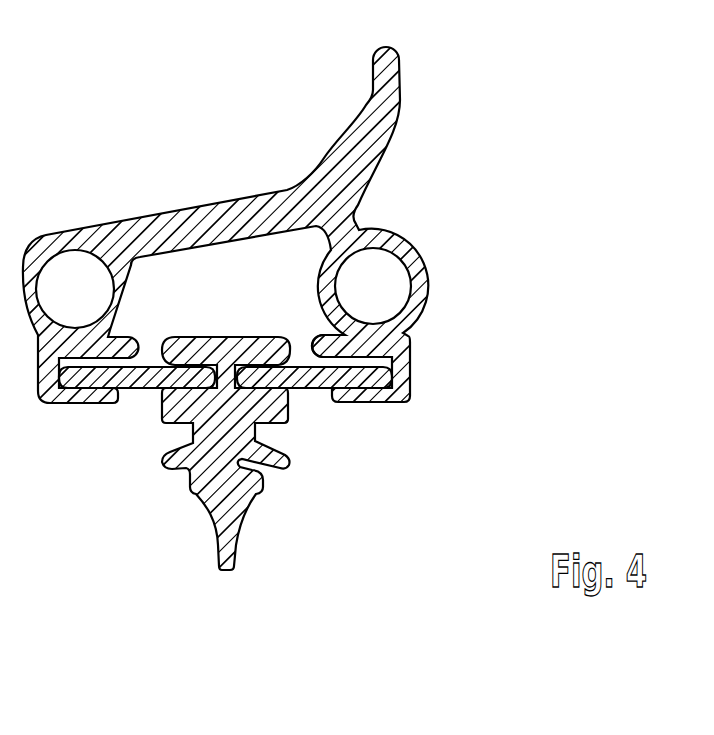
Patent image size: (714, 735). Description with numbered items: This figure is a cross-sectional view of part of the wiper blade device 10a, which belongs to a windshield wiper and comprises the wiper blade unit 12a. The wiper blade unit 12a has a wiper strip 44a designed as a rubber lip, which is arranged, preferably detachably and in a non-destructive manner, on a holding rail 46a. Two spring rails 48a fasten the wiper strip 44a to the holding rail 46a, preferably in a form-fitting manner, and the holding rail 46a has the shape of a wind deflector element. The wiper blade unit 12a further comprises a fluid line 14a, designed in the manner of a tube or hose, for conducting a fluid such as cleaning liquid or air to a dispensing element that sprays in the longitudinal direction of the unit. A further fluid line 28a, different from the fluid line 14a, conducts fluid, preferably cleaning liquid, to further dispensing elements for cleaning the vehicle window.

The wiper blade device 10a is at (136, 126).
The wiper blade unit 12a is at (199, 155).
The fluid line 14a is at (62, 250).
The further fluid line 28a is at (393, 234).
The wiper strip 44a is at (235, 514).
The holding rail 46a is at (388, 335).
The spring rails 48a is at (138, 380).